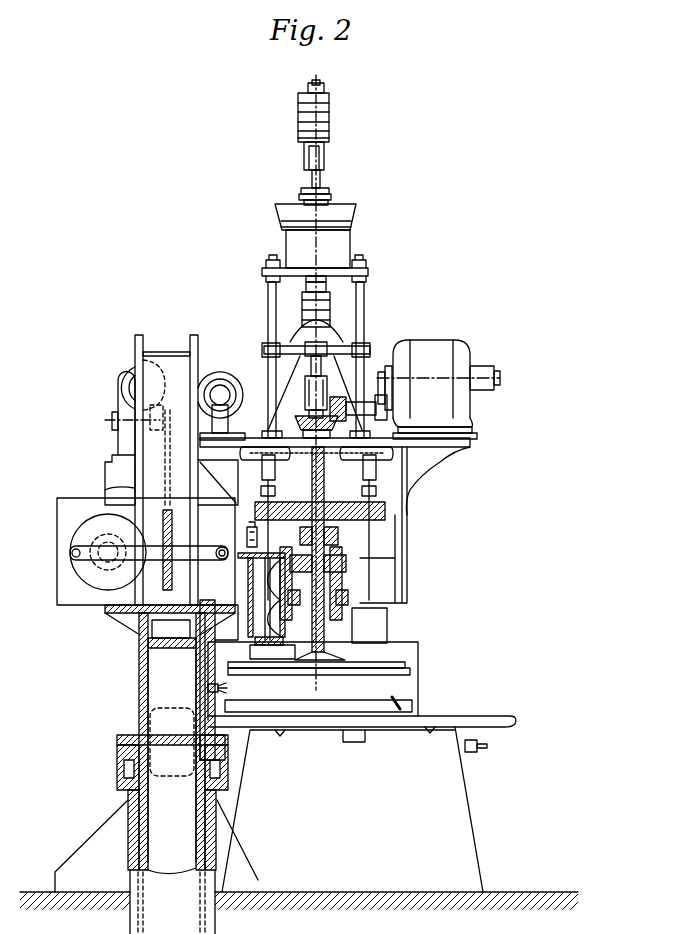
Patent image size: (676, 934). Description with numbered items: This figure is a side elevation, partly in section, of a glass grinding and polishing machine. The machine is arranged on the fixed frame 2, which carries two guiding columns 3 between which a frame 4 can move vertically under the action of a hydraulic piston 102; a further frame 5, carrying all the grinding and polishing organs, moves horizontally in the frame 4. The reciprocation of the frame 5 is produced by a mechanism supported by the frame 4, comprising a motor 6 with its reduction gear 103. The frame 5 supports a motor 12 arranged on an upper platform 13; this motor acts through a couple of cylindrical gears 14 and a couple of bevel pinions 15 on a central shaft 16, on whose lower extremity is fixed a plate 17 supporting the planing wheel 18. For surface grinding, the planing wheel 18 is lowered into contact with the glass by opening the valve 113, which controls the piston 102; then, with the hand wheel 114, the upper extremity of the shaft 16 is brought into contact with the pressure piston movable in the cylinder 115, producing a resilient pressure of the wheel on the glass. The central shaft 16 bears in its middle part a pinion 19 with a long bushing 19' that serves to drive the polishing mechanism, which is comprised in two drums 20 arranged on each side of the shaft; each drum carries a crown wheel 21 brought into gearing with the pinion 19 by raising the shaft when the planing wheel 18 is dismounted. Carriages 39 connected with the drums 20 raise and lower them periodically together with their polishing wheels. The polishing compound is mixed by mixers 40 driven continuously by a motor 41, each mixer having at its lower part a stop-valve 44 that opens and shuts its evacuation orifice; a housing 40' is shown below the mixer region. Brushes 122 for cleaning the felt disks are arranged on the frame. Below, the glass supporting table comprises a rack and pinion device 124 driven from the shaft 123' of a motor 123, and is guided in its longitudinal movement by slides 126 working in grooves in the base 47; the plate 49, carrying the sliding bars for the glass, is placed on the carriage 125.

The fixed frame 2 is at (95, 846).
The guiding columns 3 is at (150, 460).
The frame 4 is at (120, 497).
The frame 5 is at (60, 581).
The motor 6 is at (121, 366).
The motor 12 is at (437, 345).
The upper platform 13 is at (470, 443).
The cylindrical gears 14 is at (385, 380).
The bevel pinions 15 is at (300, 424).
The central shaft 16 is at (305, 395).
The plate 17 is at (345, 660).
The planing wheel 18 is at (405, 671).
The pinion 19 is at (364, 549).
The long bushing 19' is at (332, 583).
The drums 20 is at (385, 486).
The crown wheel 21 is at (370, 526).
The carriages 39 is at (246, 541).
The mixers 40 is at (391, 625).
The spring housing 40' is at (260, 606).
The motor 41 is at (213, 372).
The stop-valve 44 is at (237, 655).
The base 47 is at (455, 803).
The plate 49 is at (415, 705).
The hydraulic piston 102 is at (146, 694).
The reduction gear 103 is at (125, 403).
The valve 113 is at (487, 746).
The hand wheel 114 is at (338, 345).
The cylinder 115 is at (343, 243).
The brushes 122 is at (234, 691).
The motor 123 is at (161, 789).
The shaft 123' is at (226, 747).
The rack and pinion device 124 is at (355, 742).
The carriage 125 is at (450, 718).
The slides 126 is at (280, 736).